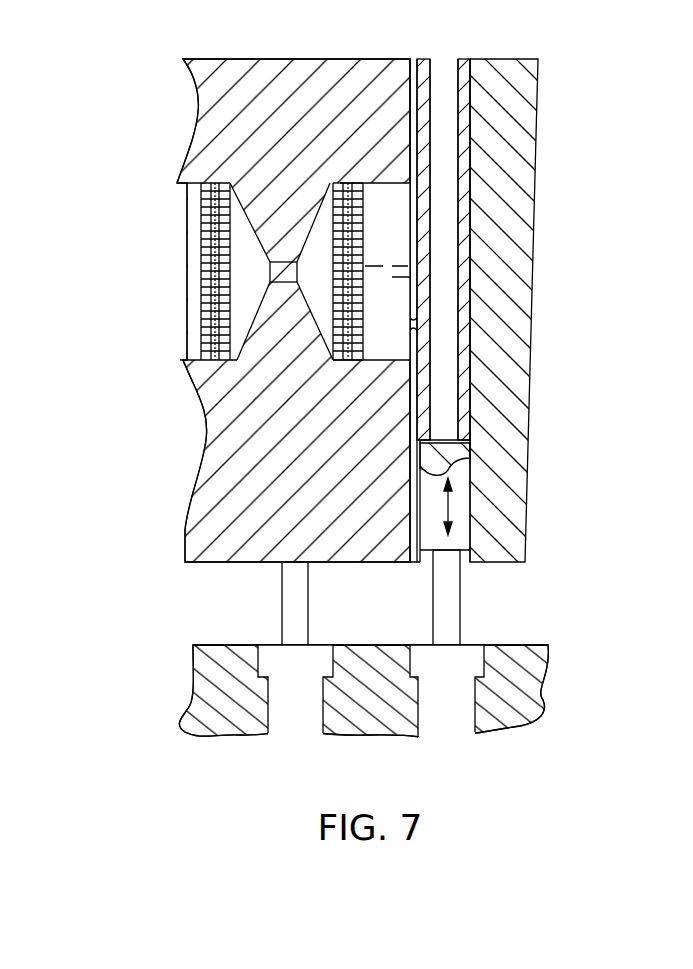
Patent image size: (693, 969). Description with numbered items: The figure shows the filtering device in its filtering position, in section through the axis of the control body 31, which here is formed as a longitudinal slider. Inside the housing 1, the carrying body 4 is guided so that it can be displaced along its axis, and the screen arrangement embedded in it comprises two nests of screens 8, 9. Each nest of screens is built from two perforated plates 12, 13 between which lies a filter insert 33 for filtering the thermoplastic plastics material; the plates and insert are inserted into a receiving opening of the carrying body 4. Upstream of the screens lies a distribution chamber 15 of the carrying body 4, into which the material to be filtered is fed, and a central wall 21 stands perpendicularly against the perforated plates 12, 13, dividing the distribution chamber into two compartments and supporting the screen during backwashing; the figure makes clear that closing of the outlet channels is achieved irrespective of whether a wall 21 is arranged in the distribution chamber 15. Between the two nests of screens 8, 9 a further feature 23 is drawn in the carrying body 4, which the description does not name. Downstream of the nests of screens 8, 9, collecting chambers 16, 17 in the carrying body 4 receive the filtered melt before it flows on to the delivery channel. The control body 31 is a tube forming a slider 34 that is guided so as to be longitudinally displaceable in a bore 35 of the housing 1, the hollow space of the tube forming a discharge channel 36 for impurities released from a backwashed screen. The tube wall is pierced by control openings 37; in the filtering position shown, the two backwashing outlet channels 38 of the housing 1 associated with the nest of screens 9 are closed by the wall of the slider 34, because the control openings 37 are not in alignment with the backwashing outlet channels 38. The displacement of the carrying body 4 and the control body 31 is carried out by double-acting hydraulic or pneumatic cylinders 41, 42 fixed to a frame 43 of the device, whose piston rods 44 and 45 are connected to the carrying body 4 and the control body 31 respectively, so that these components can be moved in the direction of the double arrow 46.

The housing 1 is at (500, 520).
The carrying body 4 is at (218, 497).
The nest of screens 8 is at (224, 362).
The nest of screens 9 is at (350, 362).
The perforated plate 12 is at (333, 196).
The perforated plate 13 is at (360, 183).
The distribution chamber 15 is at (392, 195).
The collecting chamber 16 is at (240, 290).
The collecting chamber 17 is at (325, 300).
The central wall 21 is at (378, 268).
The neck 23 is at (279, 270).
The control body 31 is at (468, 565).
The filter insert 33 is at (345, 182).
The slider 34 is at (467, 378).
The bore 35 is at (470, 422).
The discharge channel 36 is at (462, 258).
The control opening 37 is at (423, 322).
The backwashing outlet channel 38 is at (412, 262).
The double-acting hydraulic or pneumatic cylinder 41 is at (285, 702).
The double-acting hydraulic or pneumatic cylinder 42 is at (453, 693).
The frame 43 is at (513, 652).
The piston rod 44 is at (298, 583).
The piston rod 45 is at (445, 595).
The double arrow 46 is at (441, 508).